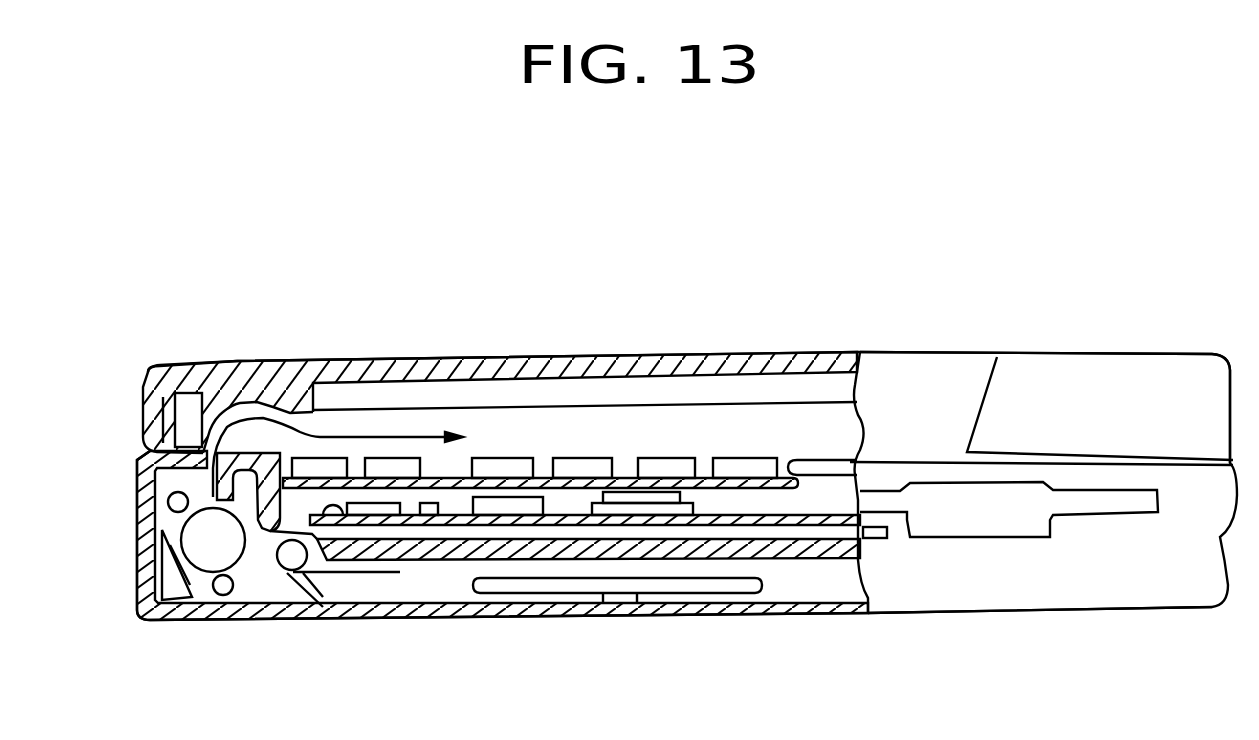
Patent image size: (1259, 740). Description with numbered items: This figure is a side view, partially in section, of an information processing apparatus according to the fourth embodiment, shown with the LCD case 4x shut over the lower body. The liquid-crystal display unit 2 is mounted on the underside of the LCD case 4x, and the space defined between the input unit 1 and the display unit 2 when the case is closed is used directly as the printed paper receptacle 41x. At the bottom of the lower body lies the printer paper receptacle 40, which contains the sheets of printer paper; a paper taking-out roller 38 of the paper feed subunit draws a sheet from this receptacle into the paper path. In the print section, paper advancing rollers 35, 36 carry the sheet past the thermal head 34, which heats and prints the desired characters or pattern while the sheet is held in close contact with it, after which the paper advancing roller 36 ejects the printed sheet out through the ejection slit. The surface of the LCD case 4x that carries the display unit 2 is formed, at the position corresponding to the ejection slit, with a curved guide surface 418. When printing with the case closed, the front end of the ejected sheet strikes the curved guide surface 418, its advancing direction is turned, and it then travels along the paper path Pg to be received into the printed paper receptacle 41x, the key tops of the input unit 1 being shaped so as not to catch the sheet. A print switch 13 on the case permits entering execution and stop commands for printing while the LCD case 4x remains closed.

The input unit 1 is at (667, 467).
The liquid-crystal display unit 2 is at (790, 383).
The LCD case 4x is at (317, 363).
The print switch 13 is at (208, 360).
The thermal head 34 is at (163, 600).
The paper advancing roller 35 is at (222, 597).
The paper advancing roller 36 is at (177, 501).
The paper taking-out roller 38 is at (292, 570).
The printer paper receptacle 40 is at (458, 598).
The printed paper receptacle 41x is at (683, 410).
The curved guide surface 418 is at (248, 362).
The paper path Pg is at (412, 432).